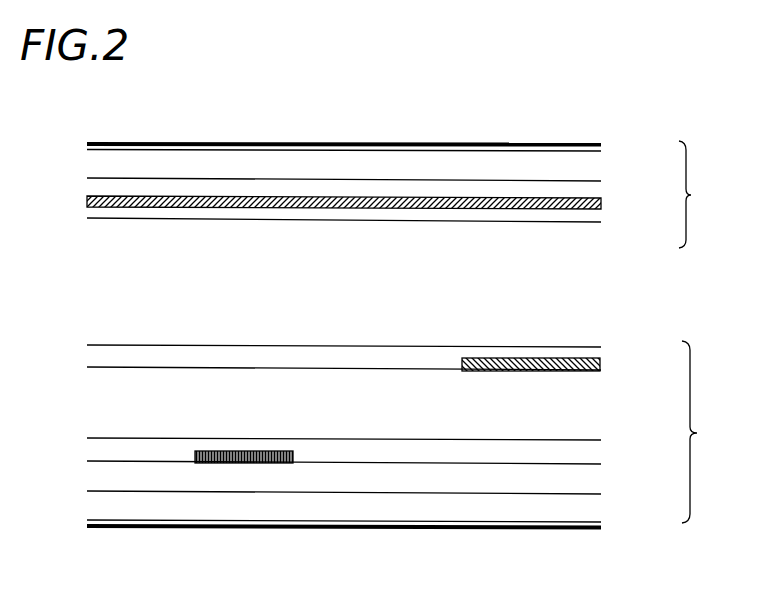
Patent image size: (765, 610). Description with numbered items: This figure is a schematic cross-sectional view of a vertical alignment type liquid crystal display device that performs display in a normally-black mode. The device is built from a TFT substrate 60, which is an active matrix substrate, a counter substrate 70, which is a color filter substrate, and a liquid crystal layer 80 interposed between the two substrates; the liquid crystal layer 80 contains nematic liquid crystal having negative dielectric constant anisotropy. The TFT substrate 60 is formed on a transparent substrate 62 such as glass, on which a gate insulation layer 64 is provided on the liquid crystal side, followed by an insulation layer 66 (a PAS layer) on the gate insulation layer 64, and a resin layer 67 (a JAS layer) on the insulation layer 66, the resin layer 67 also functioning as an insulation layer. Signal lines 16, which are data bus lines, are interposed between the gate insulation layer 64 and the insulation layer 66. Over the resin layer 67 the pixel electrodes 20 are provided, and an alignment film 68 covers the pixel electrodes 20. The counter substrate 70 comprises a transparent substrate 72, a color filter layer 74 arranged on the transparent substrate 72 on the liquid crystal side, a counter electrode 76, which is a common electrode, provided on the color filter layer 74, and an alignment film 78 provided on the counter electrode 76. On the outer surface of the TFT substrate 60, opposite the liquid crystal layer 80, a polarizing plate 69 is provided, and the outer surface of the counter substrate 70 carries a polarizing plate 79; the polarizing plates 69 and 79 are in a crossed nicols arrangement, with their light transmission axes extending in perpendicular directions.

The signal line 16 is at (256, 455).
The pixel electrode 20 is at (485, 358).
The TFT substrate 60 is at (704, 432).
The transparent substrate 62 is at (593, 513).
The gate insulation layer 64 is at (593, 485).
The insulation layer 66 is at (593, 457).
The resin layer 67 is at (600, 408).
The alignment film 68 is at (593, 353).
The polarizing plate 69 is at (308, 529).
The counter substrate 70 is at (700, 194).
The transparent substrate 72 is at (592, 163).
The color filter layer 74 is at (592, 190).
The counter electrode 76 is at (603, 202).
The alignment film 78 is at (592, 215).
The polarizing plate 79 is at (385, 143).
The liquid crystal layer 80 is at (588, 297).